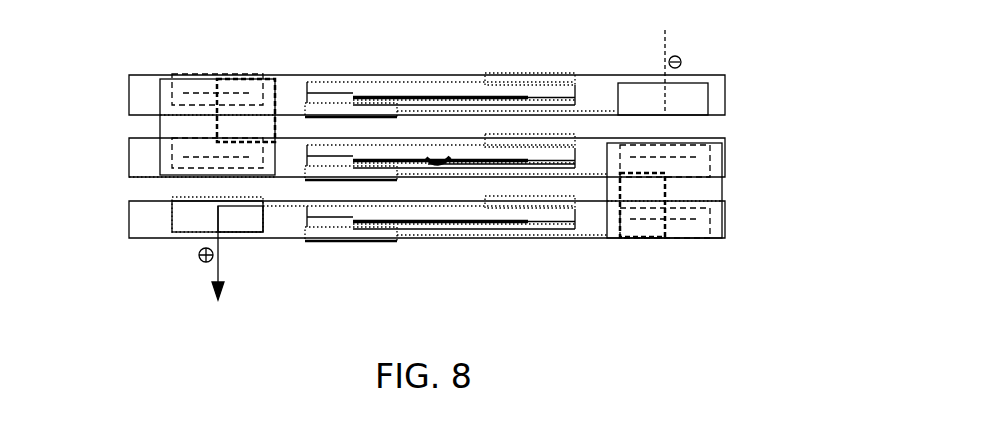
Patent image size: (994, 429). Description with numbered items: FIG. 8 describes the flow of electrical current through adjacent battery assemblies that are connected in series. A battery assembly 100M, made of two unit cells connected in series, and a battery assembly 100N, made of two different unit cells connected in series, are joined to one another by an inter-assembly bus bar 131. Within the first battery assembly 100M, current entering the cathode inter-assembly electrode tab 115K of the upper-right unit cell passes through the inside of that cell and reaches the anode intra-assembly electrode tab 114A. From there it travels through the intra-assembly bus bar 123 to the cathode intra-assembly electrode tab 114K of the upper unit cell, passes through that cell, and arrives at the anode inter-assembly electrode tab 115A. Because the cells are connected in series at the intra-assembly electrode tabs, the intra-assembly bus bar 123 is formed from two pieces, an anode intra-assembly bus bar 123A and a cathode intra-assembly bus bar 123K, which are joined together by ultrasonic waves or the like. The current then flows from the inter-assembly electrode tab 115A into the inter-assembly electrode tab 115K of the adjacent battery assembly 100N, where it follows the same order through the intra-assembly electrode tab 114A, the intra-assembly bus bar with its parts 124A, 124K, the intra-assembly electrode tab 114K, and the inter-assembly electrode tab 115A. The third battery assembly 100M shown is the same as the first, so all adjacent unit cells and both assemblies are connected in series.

The battery assembly 100M is at (130, 70).
The battery assembly 100N is at (128, 133).
The inter-assembly bus bar 131 is at (265, 86).
The anode inter-assembly electrode tab 115A is at (255, 55).
The cathode inter-assembly electrode tab 115K is at (173, 152).
The intra-assembly bus bar 123 is at (388, 37).
The cathode intra-assembly bus bar 123K is at (391, 95).
The anode intra-assembly bus bar 123A is at (447, 103).
The cathode intra-assembly electrode tab 114K is at (502, 74).
The anode intra-assembly electrode tab 114A is at (323, 105).
The positive electrode lead 124A is at (575, 147).
The negative electrode lead 124K is at (575, 162).